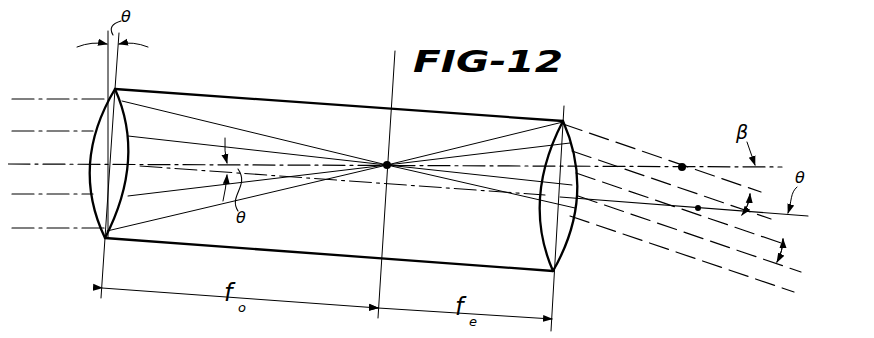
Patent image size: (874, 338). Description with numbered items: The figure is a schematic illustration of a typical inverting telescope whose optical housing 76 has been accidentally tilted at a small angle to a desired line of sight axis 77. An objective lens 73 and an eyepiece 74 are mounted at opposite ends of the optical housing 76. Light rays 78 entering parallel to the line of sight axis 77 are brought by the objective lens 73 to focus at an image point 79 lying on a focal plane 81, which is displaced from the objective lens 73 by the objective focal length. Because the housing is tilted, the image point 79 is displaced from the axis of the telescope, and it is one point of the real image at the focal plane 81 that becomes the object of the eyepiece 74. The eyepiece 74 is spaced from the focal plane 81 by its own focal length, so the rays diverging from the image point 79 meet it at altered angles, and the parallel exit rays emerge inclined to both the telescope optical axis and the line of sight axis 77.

The objective lens 73 is at (96, 208).
The eyepiece 74 is at (565, 250).
The optical housing 76 is at (267, 100).
The line of sight axis 77 is at (47, 163).
The light rays 78 is at (49, 130).
The image point 79 is at (391, 161).
The focal plane 81 is at (392, 92).